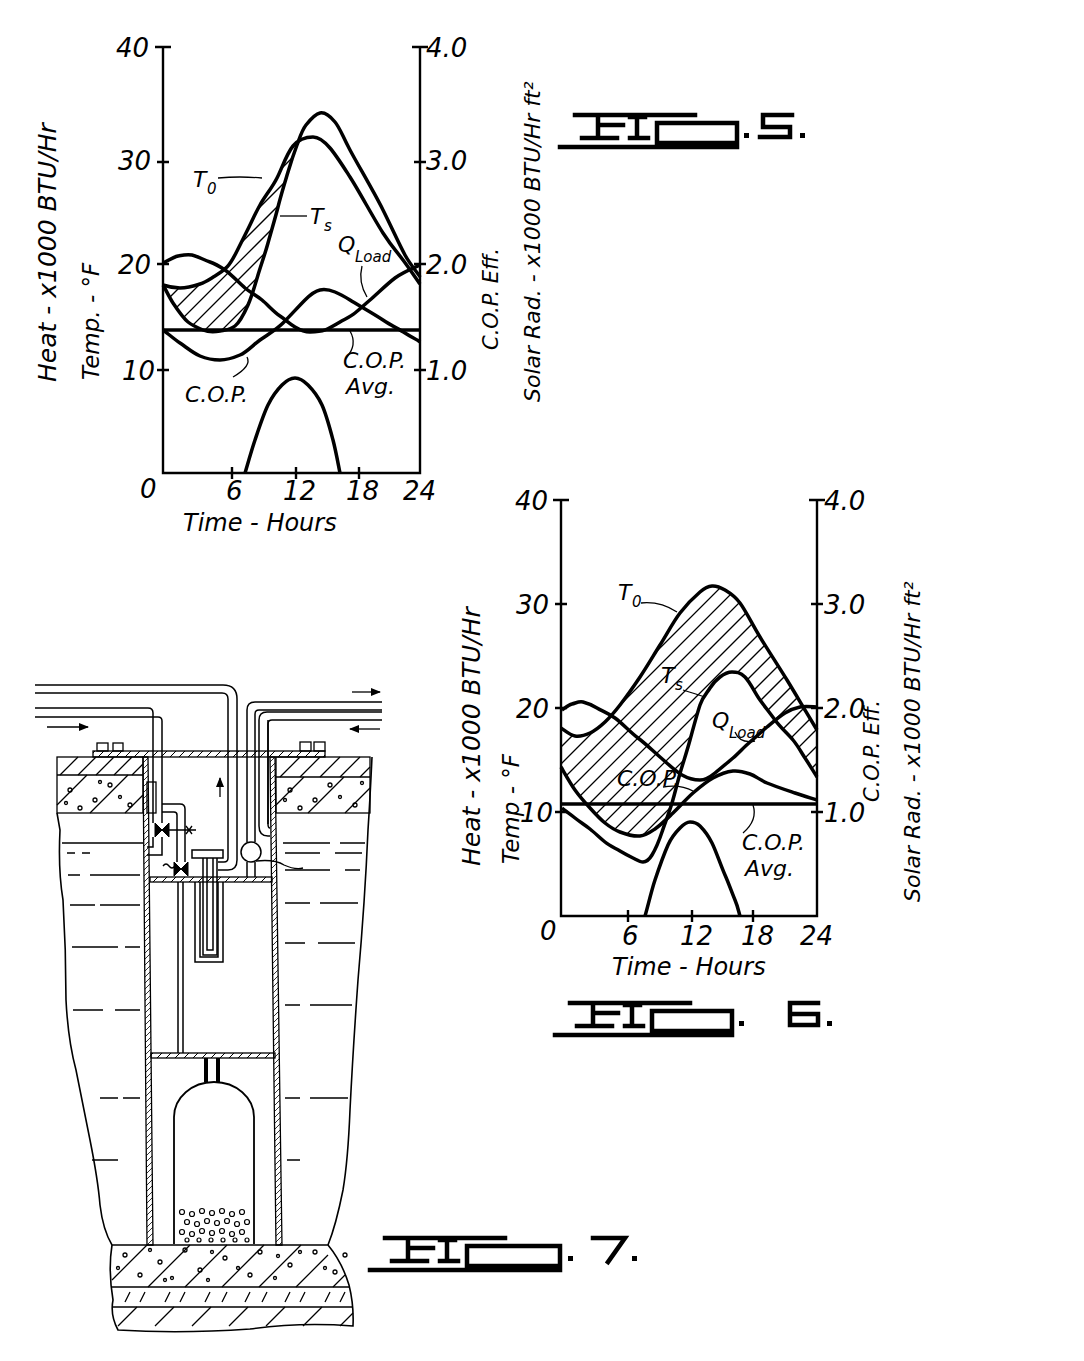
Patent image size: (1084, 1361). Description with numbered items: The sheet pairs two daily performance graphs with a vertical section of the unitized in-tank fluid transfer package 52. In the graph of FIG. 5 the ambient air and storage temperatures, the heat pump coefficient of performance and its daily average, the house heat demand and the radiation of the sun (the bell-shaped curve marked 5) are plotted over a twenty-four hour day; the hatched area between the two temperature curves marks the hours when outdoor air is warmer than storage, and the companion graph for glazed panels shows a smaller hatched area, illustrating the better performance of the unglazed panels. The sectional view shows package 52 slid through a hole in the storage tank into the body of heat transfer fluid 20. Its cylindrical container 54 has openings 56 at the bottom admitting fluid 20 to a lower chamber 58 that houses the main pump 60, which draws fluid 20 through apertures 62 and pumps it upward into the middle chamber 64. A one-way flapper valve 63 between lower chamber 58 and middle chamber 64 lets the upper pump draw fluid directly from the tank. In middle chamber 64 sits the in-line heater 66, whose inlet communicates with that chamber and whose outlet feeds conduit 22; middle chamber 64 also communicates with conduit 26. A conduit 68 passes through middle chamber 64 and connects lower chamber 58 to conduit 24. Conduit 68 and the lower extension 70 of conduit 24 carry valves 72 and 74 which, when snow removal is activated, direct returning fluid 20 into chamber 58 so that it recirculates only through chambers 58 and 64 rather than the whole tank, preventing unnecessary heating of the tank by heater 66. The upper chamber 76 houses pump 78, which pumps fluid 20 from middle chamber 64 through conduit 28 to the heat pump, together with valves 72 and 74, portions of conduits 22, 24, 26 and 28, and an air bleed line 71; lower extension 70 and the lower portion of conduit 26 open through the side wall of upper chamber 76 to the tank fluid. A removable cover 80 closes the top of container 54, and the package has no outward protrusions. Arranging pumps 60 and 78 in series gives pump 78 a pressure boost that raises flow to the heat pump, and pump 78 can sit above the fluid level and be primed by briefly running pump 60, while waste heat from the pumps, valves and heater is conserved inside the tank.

In FIG. 5, the solar radiation curve 5 is at (340, 447).
In FIG. 6, the solar radiation curve 5 is at (650, 878).
In FIG. 7, the heat transfer fluid 20 is at (323, 1088).
In FIG. 7, the conduit 22 is at (198, 684).
In FIG. 7, the conduit 24 is at (163, 737).
In FIG. 7, the conduit 26 is at (327, 715).
In FIG. 7, the conduit 28 is at (280, 702).
In FIG. 7, the in-tank fluid transfer package 52 is at (135, 1048).
In FIG. 7, the cylindrical container 54 is at (143, 978).
In FIG. 7, the openings 56 is at (146, 1215).
In FIG. 7, the interior lower chamber 58 is at (263, 1090).
In FIG. 7, the main pump 60 is at (218, 1144).
In FIG. 7, the apertures 62 is at (214, 1201).
In FIG. 7, the one-way flapper valve 63 is at (257, 1050).
In FIG. 7, the middle chamber 64 is at (247, 1025).
In FIG. 7, the in-line heater 66 is at (220, 918).
In FIG. 7, the conduit 68 is at (188, 1007).
In FIG. 7, the lower extension 70 is at (114, 838).
In FIG. 7, the air bleed line 71 is at (160, 797).
In FIG. 7, the valve 72 is at (175, 882).
In FIG. 7, the valve 74 is at (142, 845).
In FIG. 7, the upper chamber 76 is at (199, 791).
In FIG. 7, the pump 78 is at (216, 958).
In FIG. 7, the removable cover 80 is at (290, 743).